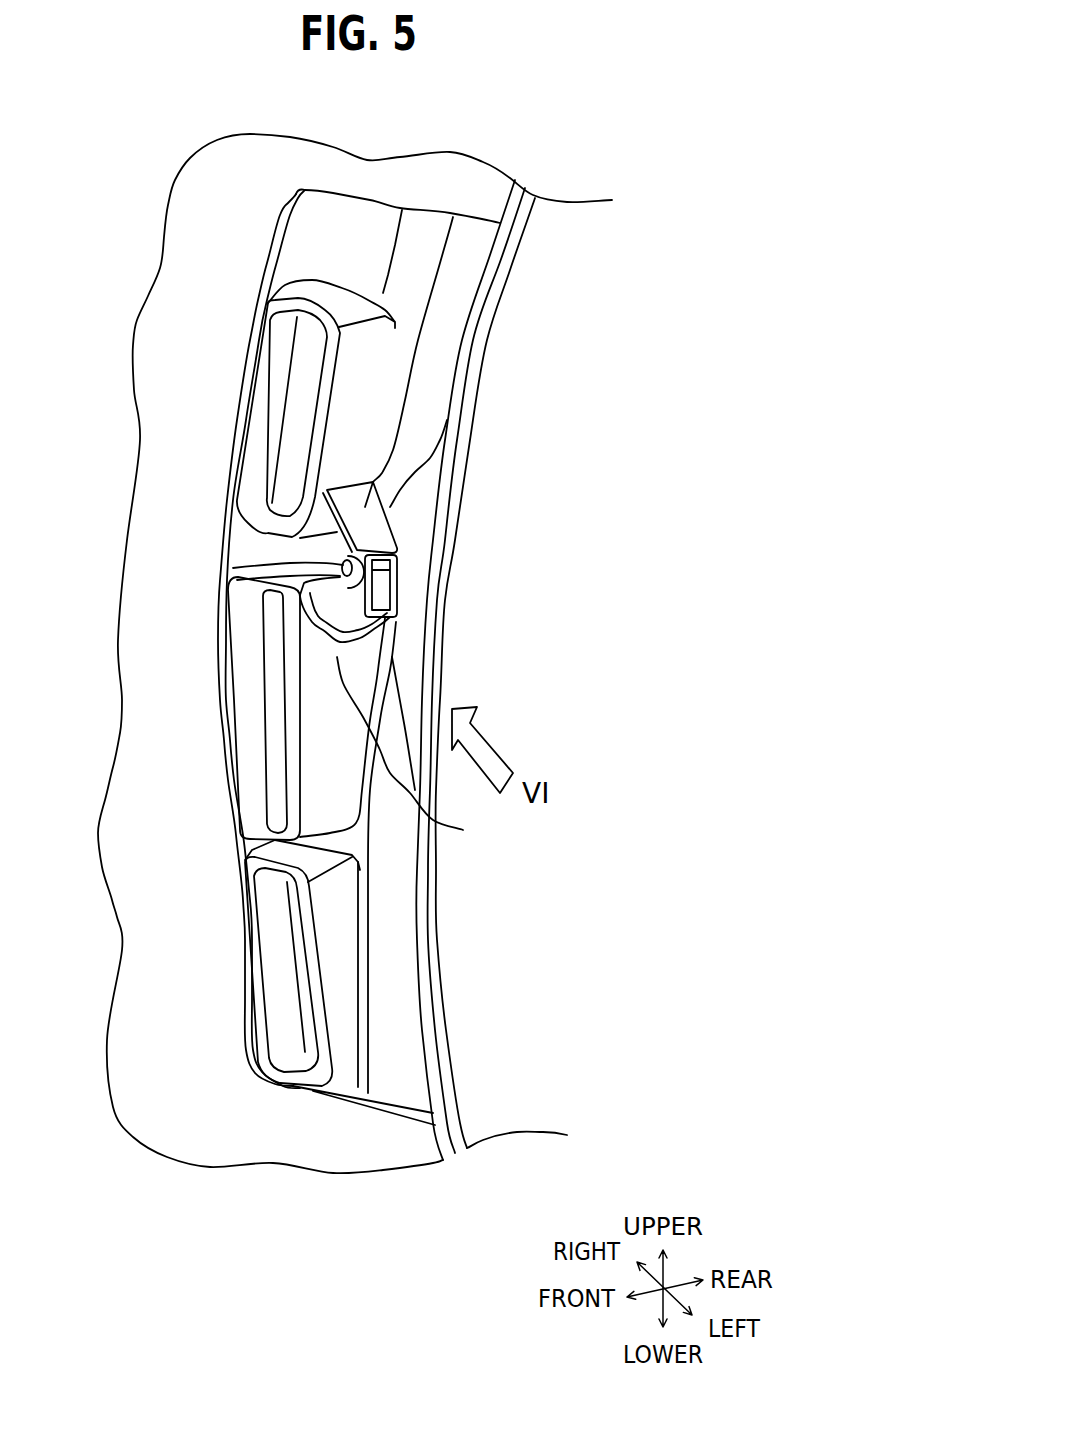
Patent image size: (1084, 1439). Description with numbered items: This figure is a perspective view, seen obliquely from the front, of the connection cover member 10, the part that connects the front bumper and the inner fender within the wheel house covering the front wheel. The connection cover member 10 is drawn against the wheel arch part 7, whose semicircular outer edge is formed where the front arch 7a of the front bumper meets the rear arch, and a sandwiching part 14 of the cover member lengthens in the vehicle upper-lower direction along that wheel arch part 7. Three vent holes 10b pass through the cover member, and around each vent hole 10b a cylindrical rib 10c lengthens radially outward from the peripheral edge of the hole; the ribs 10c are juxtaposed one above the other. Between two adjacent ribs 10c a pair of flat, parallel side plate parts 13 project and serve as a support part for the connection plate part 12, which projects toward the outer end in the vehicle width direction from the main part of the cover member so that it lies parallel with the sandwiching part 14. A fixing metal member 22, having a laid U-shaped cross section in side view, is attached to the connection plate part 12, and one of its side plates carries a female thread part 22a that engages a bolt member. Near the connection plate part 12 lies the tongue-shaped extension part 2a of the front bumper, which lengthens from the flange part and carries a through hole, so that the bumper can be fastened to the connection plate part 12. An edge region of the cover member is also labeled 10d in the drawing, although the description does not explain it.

The connection cover member 10 is at (337, 230).
The vent hole 10b is at (286, 414).
The rib 10c is at (253, 487).
The bent edge of bracket 10d is at (493, 415).
The wheel arch part 7 is at (517, 228).
The front arch 7a is at (437, 573).
The extension part 2a is at (400, 522).
The side plate part 13 is at (433, 458).
The sandwiching part 14 is at (383, 865).
The fixing metal member 22 is at (400, 590).
The female thread part 22a is at (340, 560).
The connection plate part 12 is at (397, 600).